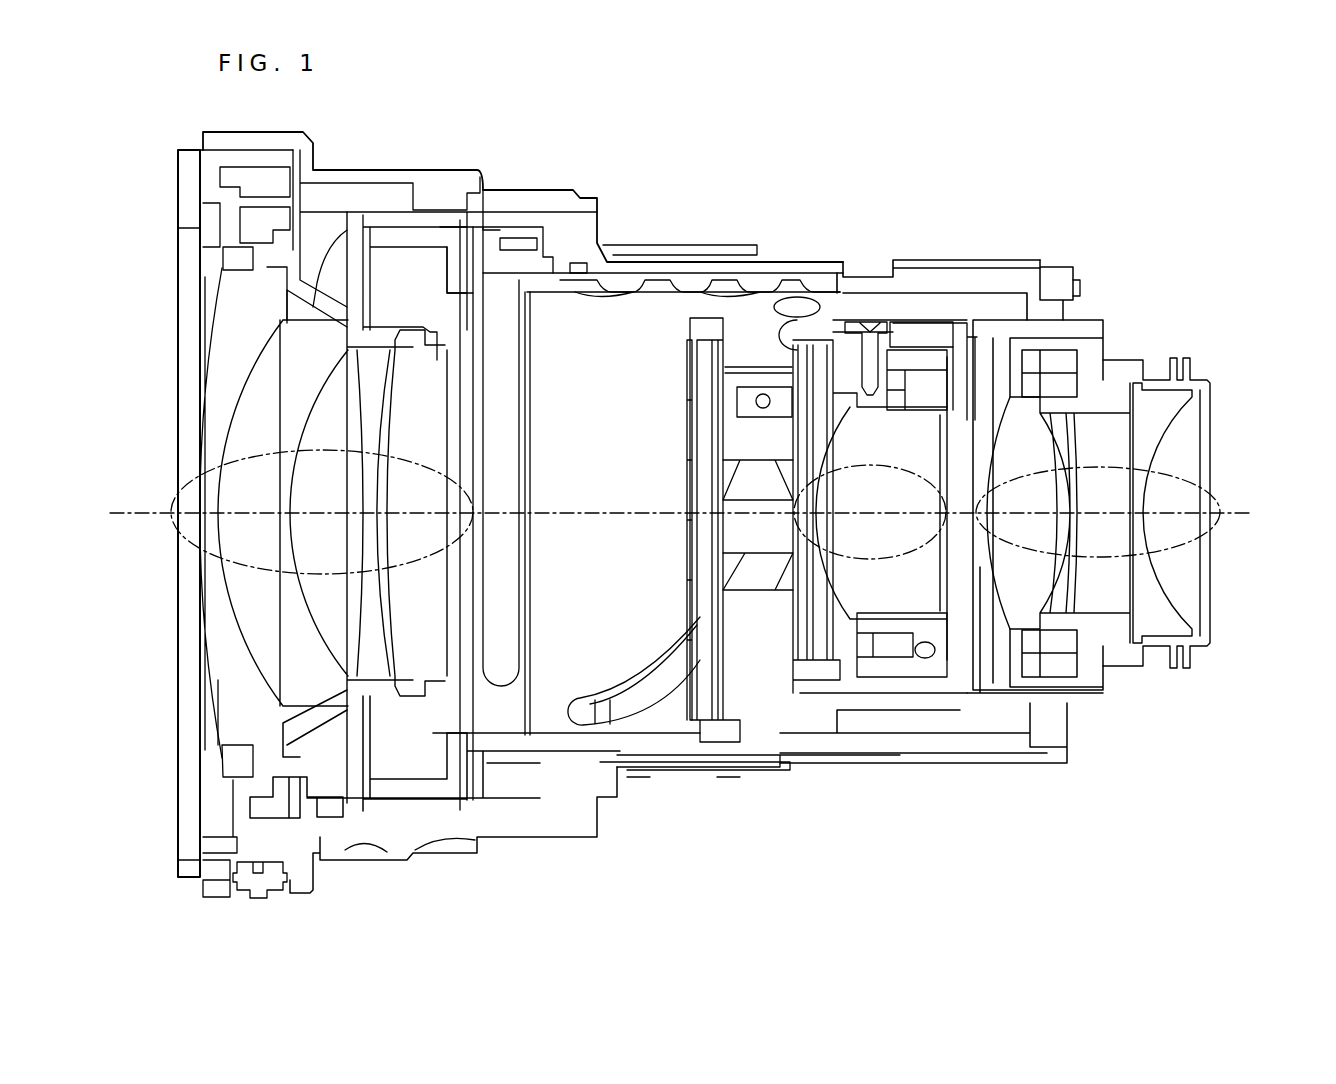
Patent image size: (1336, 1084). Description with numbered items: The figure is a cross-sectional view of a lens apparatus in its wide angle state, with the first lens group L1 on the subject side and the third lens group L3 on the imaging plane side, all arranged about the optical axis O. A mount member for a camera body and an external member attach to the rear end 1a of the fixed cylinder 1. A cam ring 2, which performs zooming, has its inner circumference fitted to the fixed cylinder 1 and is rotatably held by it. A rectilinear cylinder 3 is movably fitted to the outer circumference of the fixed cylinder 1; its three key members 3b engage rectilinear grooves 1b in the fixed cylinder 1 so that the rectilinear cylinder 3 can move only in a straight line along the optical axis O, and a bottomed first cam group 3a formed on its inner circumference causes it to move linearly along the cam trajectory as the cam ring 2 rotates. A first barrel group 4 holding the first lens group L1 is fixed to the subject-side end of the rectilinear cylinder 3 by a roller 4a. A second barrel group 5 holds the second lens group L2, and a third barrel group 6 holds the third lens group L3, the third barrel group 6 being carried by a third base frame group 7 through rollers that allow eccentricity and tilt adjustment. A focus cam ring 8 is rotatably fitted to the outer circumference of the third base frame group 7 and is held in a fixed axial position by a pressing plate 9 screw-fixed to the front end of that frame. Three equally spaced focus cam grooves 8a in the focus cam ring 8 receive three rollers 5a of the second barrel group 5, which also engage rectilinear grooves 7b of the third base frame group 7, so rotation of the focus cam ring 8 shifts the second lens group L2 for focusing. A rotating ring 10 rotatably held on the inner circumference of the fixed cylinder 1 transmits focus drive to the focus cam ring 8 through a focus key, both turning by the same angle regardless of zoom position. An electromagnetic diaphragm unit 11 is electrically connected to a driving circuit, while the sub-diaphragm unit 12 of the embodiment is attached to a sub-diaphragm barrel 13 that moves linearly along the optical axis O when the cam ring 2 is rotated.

The fixed cylinder 1 is at (1052, 275).
The rear end 1a is at (1080, 283).
The rectilinear grooves 1b is at (840, 760).
The cam ring 2 is at (970, 287).
The rectilinear cylinder 3 is at (372, 170).
The first cam group 3a is at (352, 852).
The key members 3b is at (692, 770).
The first barrel group 4 is at (200, 187).
The roller 4a is at (277, 895).
The second barrel group 5 is at (915, 620).
The rollers 5a is at (872, 325).
The third barrel group 6 is at (1125, 665).
The third base frame group 7 is at (1050, 700).
The rectilinear grooves 7b is at (917, 343).
The focus cam ring 8 is at (822, 320).
The focus cam grooves 8a is at (885, 338).
The pressing plate 9 is at (795, 300).
The rotating ring 10 is at (512, 262).
The electromagnetic diaphragm unit 11 is at (770, 455).
The sub-diaphragm unit 12 is at (690, 380).
The sub-diaphragm barrel 13 is at (700, 322).
The first lens group L1 is at (210, 468).
The second lens group L2 is at (870, 555).
The third lens group L3 is at (1200, 483).
The optical axis O is at (140, 515).